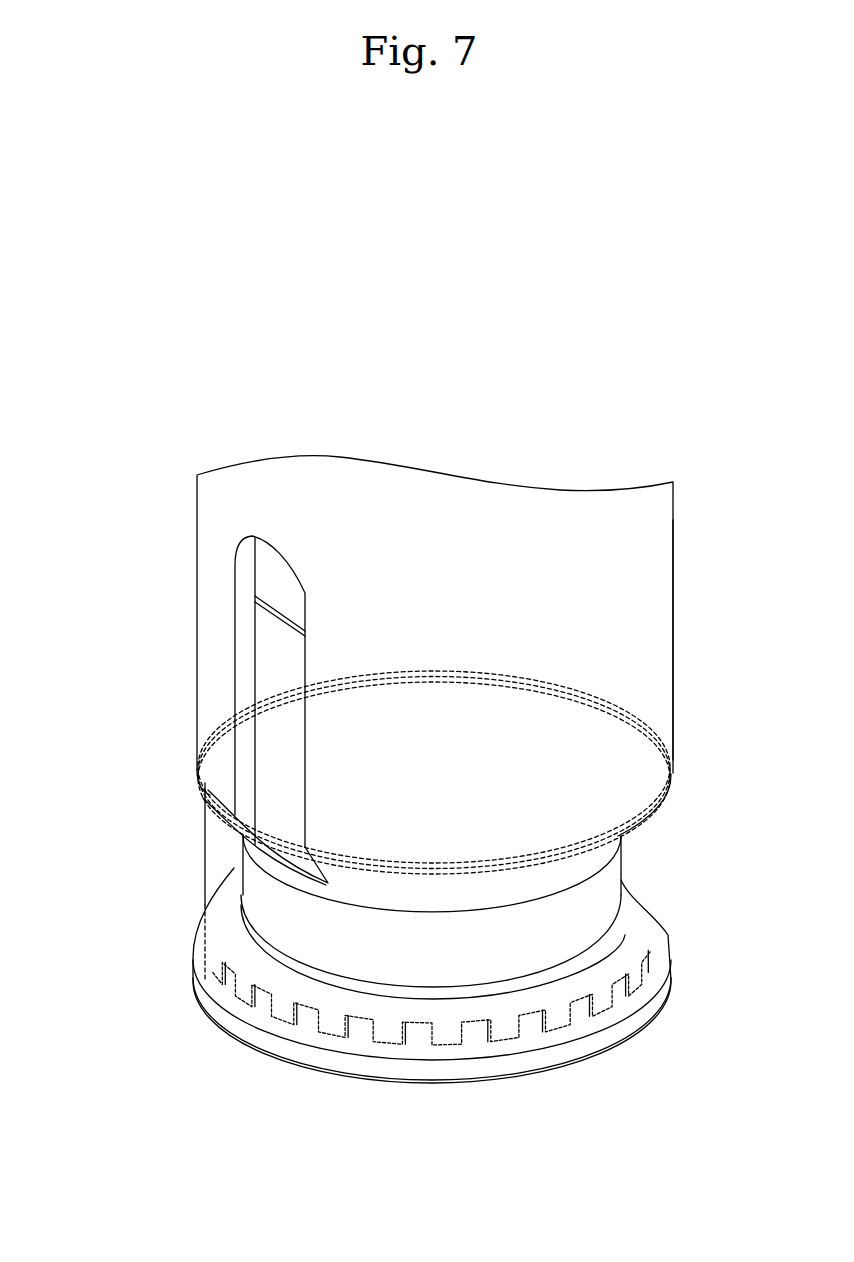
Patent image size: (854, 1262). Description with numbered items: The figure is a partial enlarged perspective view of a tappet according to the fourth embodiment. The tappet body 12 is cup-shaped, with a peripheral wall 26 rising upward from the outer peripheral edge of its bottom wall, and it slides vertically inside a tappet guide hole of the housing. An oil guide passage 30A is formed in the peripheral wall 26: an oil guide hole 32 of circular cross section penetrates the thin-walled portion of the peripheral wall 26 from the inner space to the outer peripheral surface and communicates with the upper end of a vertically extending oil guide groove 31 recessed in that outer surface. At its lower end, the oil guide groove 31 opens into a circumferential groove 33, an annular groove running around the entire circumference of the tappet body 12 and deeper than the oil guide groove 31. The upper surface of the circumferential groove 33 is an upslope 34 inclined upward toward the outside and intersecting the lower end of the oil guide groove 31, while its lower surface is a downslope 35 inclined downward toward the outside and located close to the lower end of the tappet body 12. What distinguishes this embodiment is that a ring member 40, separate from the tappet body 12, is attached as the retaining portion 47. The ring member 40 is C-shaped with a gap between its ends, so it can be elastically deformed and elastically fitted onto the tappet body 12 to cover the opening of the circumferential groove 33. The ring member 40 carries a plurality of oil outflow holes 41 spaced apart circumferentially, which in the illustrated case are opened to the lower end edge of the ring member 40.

The tappet body 12 is at (675, 512).
The peripheral wall 26 is at (662, 609).
The oil guide passage 30A is at (189, 710).
The oil guide groove 31 is at (265, 655).
The oil guide hole 32 is at (265, 571).
The circumferential groove 33 is at (243, 863).
The upslope 34 is at (578, 855).
The downslope 35 is at (645, 920).
The ring member 40 is at (389, 978).
The oil outflow holes 41 is at (310, 1015).
The retaining portion 47 is at (240, 876).